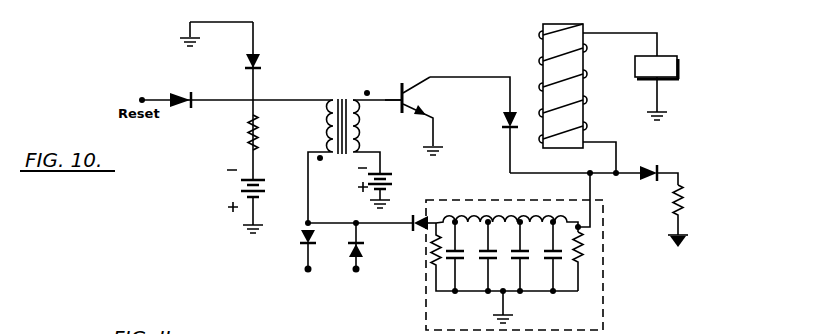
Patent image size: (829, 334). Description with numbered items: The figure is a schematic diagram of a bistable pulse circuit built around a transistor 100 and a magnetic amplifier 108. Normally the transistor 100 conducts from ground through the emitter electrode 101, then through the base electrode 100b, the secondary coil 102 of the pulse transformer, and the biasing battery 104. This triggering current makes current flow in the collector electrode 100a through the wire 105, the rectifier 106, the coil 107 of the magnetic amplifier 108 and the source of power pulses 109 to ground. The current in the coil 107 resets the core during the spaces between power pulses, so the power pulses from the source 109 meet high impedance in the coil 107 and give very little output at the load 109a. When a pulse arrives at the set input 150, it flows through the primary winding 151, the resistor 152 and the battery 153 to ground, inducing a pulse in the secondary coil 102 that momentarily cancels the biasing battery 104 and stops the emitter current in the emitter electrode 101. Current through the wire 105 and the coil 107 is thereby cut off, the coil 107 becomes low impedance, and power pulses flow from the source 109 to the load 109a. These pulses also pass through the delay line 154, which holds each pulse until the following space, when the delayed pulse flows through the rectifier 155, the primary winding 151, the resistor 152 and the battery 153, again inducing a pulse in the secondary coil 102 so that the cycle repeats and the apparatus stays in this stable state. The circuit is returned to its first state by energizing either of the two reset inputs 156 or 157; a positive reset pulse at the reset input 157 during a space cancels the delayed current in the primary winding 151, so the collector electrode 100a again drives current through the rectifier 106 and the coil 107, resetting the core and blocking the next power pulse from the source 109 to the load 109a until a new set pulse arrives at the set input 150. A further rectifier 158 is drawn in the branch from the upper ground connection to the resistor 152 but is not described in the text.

The transistor 100 is at (411, 103).
The collector electrode 100a is at (418, 84).
The base electrode 100b is at (385, 97).
The emitter electrode 101 is at (424, 113).
The secondary coil 102 is at (361, 132).
The biasing battery 104 is at (388, 184).
The wire 105 is at (490, 77).
The rectifier 106 is at (504, 131).
The coil 107 is at (583, 92).
The magnetic amplifier 108 is at (567, 30).
The source of power pulses 109 is at (678, 67).
The load 109a is at (676, 190).
The set input 150 is at (358, 268).
The primary winding 151 is at (324, 127).
The resistor 152 is at (248, 130).
The battery 153 is at (243, 190).
The delay line 154 is at (497, 207).
The rectifier 155 is at (410, 225).
The reset input 156 is at (304, 262).
The reset input 157 is at (170, 96).
The diode 158 is at (256, 62).